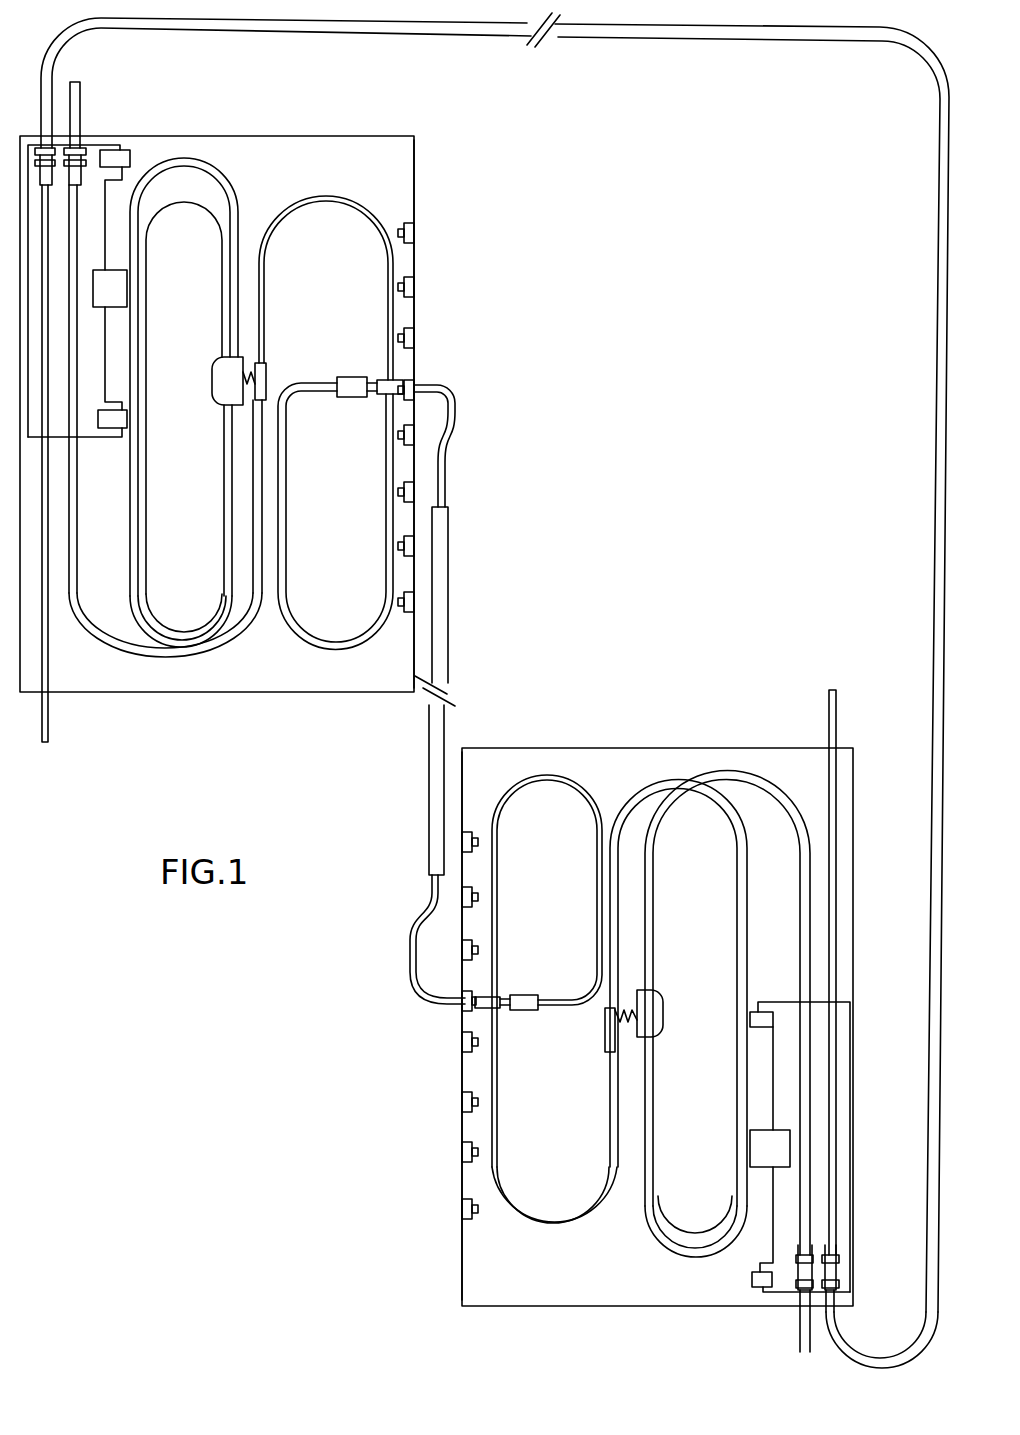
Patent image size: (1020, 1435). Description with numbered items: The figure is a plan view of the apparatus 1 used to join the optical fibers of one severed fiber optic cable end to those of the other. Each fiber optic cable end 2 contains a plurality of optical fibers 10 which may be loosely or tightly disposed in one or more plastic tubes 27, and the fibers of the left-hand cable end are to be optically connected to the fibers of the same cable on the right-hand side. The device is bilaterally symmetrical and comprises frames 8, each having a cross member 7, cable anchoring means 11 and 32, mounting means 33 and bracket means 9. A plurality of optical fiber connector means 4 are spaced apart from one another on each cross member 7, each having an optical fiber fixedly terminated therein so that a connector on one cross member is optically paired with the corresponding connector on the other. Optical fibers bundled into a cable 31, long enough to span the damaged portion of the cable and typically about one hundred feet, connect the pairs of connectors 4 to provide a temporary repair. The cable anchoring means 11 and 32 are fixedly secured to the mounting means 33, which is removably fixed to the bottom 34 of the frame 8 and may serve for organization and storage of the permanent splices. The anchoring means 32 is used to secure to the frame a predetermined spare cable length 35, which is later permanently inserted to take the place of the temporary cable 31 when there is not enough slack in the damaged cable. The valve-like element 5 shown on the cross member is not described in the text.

The apparatus 1 is at (583, 432).
The fiber optic cable end 2 is at (82, 92).
The optical fiber connector means 4 is at (398, 288).
The valve 5 is at (345, 377).
The cross member 7 is at (416, 142).
The frame 8 is at (317, 137).
The bracket means 9 is at (213, 373).
The optical fiber 10 is at (314, 197).
The cable anchoring means 11 is at (86, 163).
The plastic tube 27 is at (102, 641).
The cable 31 is at (448, 576).
The cable anchoring means 32 is at (40, 152).
The mounting means 33 is at (88, 146).
The bottom of frame 34 is at (282, 681).
The spare cable length 35 is at (680, 41).